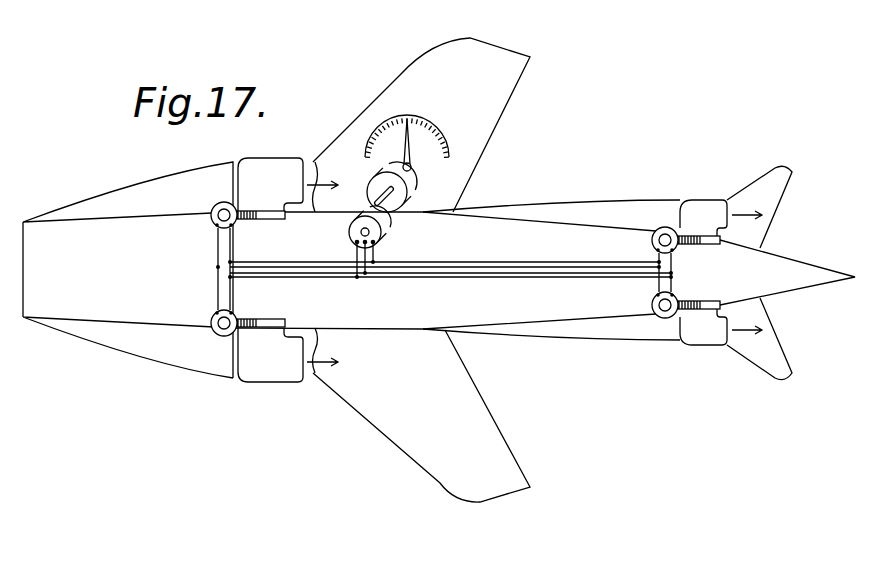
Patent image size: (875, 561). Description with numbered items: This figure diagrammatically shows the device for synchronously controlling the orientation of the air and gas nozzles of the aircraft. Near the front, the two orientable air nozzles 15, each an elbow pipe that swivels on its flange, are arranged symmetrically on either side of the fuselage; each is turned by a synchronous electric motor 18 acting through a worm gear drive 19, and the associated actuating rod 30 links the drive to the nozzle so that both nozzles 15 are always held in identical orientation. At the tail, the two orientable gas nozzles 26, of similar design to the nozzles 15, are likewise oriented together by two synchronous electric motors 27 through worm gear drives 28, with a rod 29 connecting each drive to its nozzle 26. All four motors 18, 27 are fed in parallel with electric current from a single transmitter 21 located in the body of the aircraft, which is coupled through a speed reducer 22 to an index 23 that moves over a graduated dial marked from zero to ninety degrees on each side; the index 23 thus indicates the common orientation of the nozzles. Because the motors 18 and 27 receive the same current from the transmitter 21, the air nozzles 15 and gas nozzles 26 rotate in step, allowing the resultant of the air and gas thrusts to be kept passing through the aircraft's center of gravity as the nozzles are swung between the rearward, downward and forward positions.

The orientable air nozzle 15 is at (270, 396).
The synchronous electric motor 18 is at (212, 316).
The worm gear drive 19 is at (219, 330).
The transmitter 21 is at (385, 227).
The speed reducer 22 is at (408, 186).
The index 23 is at (443, 137).
The orientable gas nozzle 26 is at (700, 337).
The synchronous electric motor 27 is at (651, 303).
The worm gear drive 28 is at (663, 318).
The rear actuating rod 29 is at (698, 245).
The forward actuating rod 30 is at (253, 320).